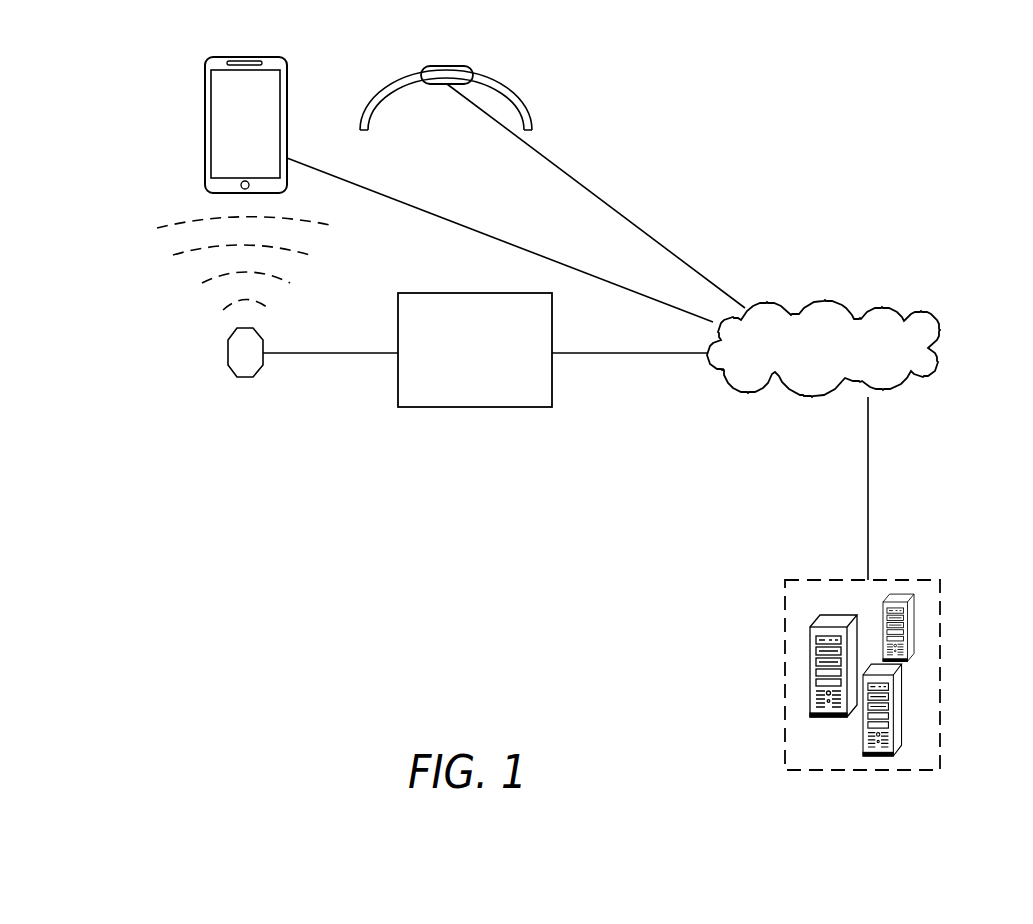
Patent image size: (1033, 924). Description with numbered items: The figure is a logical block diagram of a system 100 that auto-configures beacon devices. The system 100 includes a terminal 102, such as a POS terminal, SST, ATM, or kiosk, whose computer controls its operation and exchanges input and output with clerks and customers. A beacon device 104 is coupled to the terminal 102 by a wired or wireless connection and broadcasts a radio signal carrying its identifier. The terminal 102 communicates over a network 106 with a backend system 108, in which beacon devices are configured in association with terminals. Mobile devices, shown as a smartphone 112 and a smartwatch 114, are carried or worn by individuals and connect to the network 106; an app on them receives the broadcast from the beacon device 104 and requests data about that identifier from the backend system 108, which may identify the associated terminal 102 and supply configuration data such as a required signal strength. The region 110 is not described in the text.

The system 100 is at (690, 65).
The terminal 102 is at (443, 293).
The beacon device 104 is at (262, 340).
The network 106 is at (882, 303).
The backend system 108 is at (821, 580).
The wireless communication / user devices 110 is at (160, 185).
The smartphone 112 is at (214, 56).
The smartwatch 114 is at (465, 66).